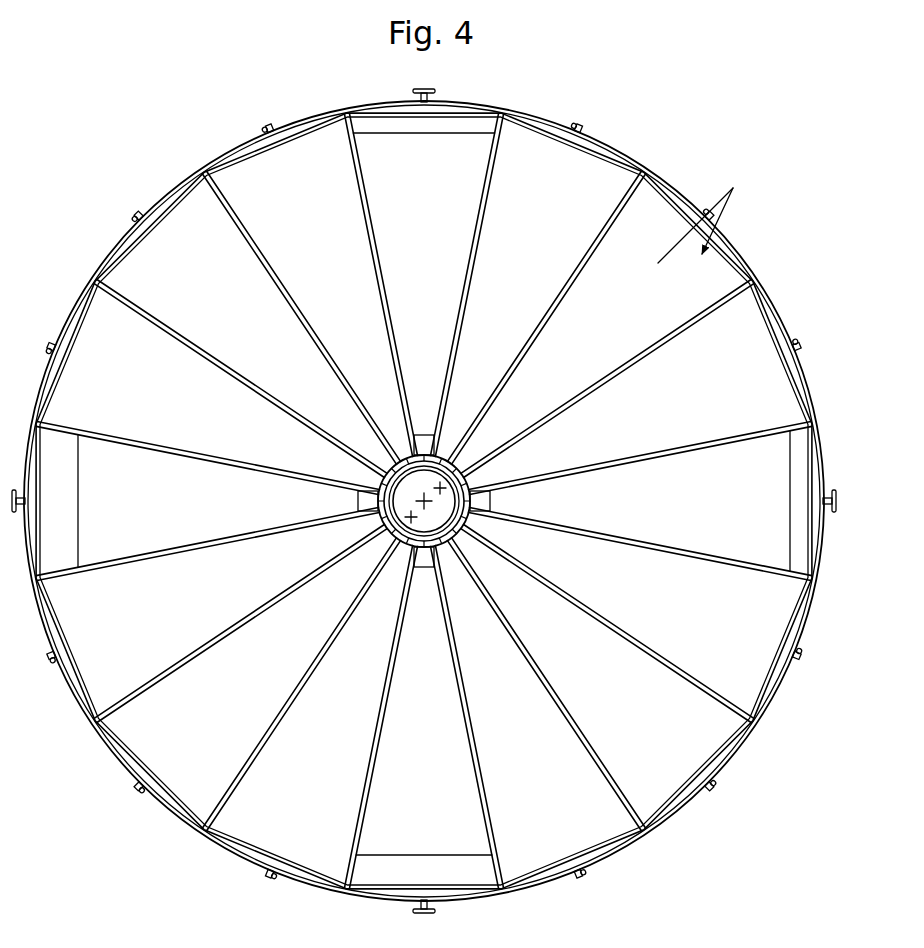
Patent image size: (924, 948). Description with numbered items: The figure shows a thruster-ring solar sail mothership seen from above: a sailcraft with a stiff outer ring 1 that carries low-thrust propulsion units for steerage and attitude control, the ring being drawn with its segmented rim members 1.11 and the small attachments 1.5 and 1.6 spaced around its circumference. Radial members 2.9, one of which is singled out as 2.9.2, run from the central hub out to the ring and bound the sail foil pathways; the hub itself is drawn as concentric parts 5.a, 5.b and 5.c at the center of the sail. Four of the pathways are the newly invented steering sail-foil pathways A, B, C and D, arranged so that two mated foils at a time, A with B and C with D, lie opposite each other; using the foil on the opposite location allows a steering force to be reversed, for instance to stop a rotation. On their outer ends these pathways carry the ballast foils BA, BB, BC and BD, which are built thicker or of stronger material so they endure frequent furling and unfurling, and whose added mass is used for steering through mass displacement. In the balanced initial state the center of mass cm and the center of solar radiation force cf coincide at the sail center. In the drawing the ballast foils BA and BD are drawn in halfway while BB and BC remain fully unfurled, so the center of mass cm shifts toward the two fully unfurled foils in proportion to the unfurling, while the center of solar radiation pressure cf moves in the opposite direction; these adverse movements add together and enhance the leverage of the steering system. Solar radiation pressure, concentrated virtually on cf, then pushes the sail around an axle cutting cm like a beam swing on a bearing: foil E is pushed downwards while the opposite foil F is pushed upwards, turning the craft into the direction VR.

The outer ring / rim of the support structure 1 is at (433, 501).
The polygonal chord members of the rim 1.11 is at (443, 490).
The rim clamps 1.6 is at (448, 501).
The rim connecting clamps (T-clamps) 1.5 is at (456, 486).
The radial spokes 2.9 is at (424, 483).
The radial spoke 2.9.2 is at (504, 284).
The direction of rotation VR is at (686, 239).
The hub outer ring 5.a is at (417, 447).
The hub connecting stubs 5.b is at (424, 447).
The hub inner rings 5.c is at (443, 434).
The center of mass cm is at (487, 473).
The center of solar radiation force cf is at (357, 535).
The ballast foil BA is at (423, 123).
The ballast foil BB is at (424, 875).
The ballast foil BC is at (106, 501).
The ballast foil BD is at (756, 501).
The steering sail-foil-pathway A is at (419, 245).
The steering sail-foil-pathway B is at (419, 730).
The steering sail-foil-pathway C is at (194, 495).
The steering sail-foil-pathway D is at (612, 512).
The sail foil E is at (236, 690).
The sail foil F is at (586, 336).